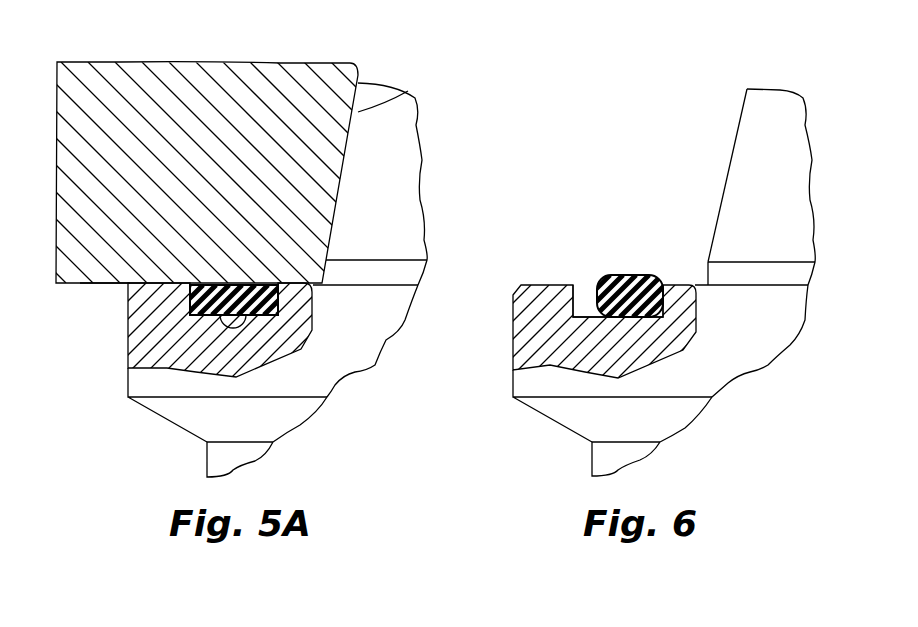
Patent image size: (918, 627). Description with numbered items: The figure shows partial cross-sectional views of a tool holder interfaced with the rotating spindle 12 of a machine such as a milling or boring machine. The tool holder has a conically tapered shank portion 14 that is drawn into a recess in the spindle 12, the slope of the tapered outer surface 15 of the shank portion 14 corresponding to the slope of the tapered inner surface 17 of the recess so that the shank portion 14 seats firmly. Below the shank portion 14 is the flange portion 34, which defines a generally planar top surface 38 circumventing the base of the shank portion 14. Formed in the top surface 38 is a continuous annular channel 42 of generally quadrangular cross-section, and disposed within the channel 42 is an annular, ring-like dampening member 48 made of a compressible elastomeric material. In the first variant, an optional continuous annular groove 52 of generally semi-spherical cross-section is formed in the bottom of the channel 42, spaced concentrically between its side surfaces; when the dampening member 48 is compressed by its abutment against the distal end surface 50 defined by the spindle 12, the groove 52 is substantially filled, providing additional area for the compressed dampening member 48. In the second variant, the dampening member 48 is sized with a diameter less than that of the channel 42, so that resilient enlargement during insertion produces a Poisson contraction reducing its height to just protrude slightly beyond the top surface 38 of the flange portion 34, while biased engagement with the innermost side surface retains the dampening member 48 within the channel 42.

In FIG. 5A, the rotating spindle 12 is at (137, 55).
In FIG. 5A, the shank portion 14 is at (398, 128).
In FIG. 6, the shank portion 14 is at (780, 112).
In FIG. 6, the tapered outer surface 15 is at (737, 122).
In FIG. 5A, the tapered inner surface 17 is at (408, 91).
In FIG. 5A, the flange portion 34 is at (108, 397).
In FIG. 6, the flange portion 34 is at (490, 394).
In FIG. 6, the top surface 38 is at (543, 283).
In FIG. 6, the channel 42 is at (590, 278).
In FIG. 5A, the dampening member 48 is at (190, 302).
In FIG. 6, the dampening member 48 is at (635, 276).
In FIG. 5A, the distal end surface 50 is at (102, 284).
In FIG. 5A, the groove 52 is at (222, 327).